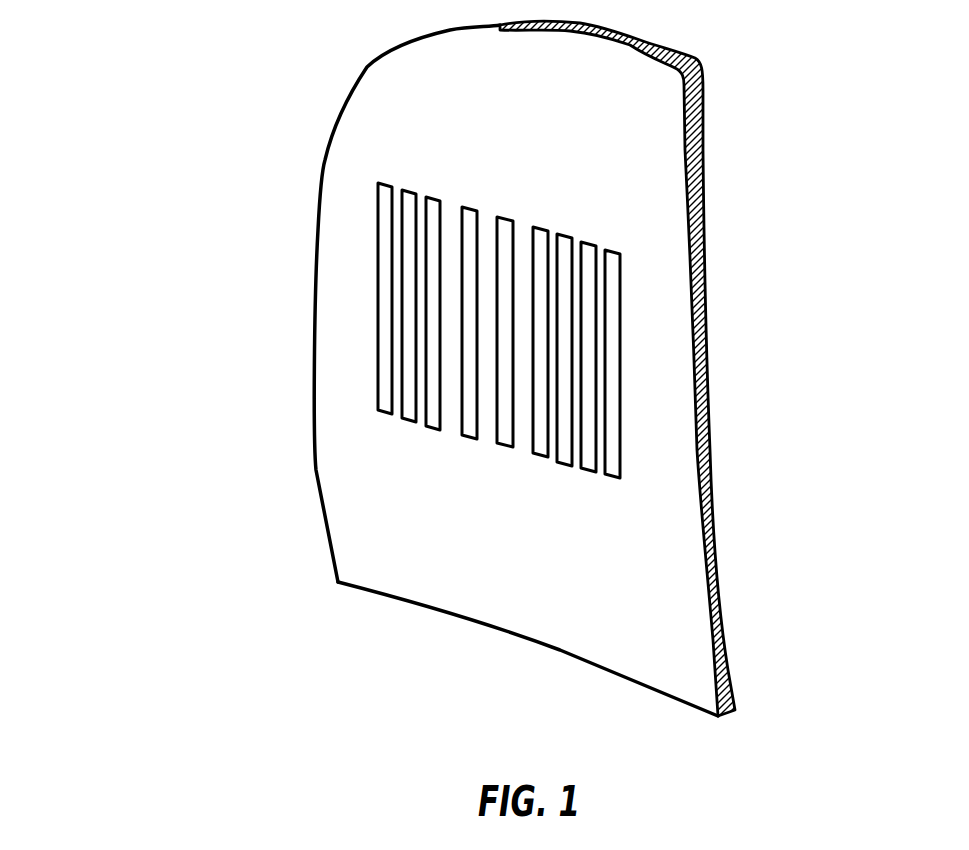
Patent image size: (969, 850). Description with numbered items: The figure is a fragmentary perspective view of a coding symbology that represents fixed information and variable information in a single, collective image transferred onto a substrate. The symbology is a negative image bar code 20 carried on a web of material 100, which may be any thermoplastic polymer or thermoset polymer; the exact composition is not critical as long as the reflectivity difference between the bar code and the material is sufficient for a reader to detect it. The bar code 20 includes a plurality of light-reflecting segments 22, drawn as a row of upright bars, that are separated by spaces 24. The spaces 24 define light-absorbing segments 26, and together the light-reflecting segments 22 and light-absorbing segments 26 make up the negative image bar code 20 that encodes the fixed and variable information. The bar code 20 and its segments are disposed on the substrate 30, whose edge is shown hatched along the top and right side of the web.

The web of material 100 is at (441, 368).
The substrate 30 is at (734, 139).
The bar code 20 is at (527, 302).
The light-reflecting segments 22 is at (585, 366).
The spaces 24 is at (528, 428).
The light-absorbing segments 26 is at (625, 341).